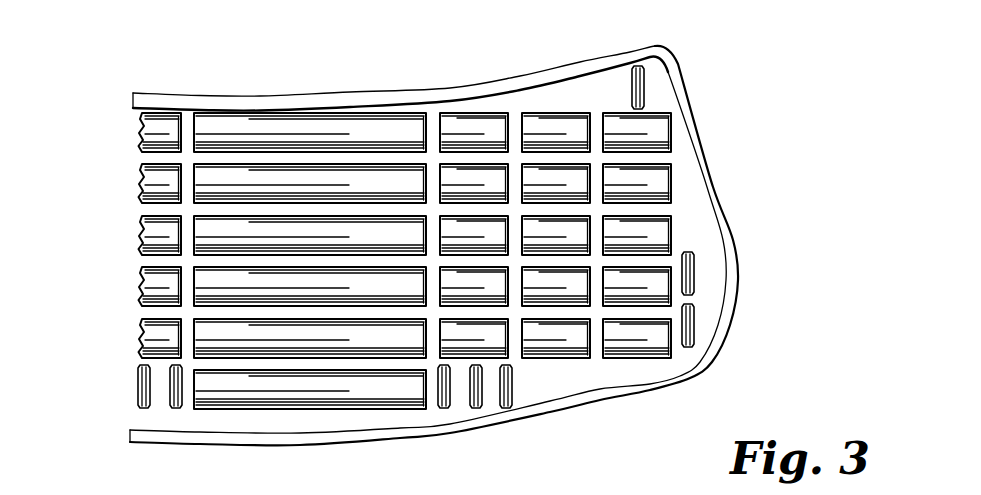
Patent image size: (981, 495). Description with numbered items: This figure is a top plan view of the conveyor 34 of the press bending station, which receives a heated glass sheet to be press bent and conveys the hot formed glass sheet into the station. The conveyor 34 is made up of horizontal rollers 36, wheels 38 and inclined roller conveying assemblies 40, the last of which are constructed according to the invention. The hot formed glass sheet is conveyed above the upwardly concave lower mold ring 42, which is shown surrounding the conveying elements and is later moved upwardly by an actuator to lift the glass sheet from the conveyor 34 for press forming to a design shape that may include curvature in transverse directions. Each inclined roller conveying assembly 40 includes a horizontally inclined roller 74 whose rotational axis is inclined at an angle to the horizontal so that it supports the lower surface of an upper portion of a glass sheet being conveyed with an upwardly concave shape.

The conveyor 34 is at (640, 373).
The horizontal rollers 36 is at (383, 230).
The wheels 38 is at (643, 87).
The inclined roller conveying assemblies 40 is at (137, 185).
The lower mold ring 42 is at (548, 426).
The horizontally inclined roller 74 is at (452, 177).